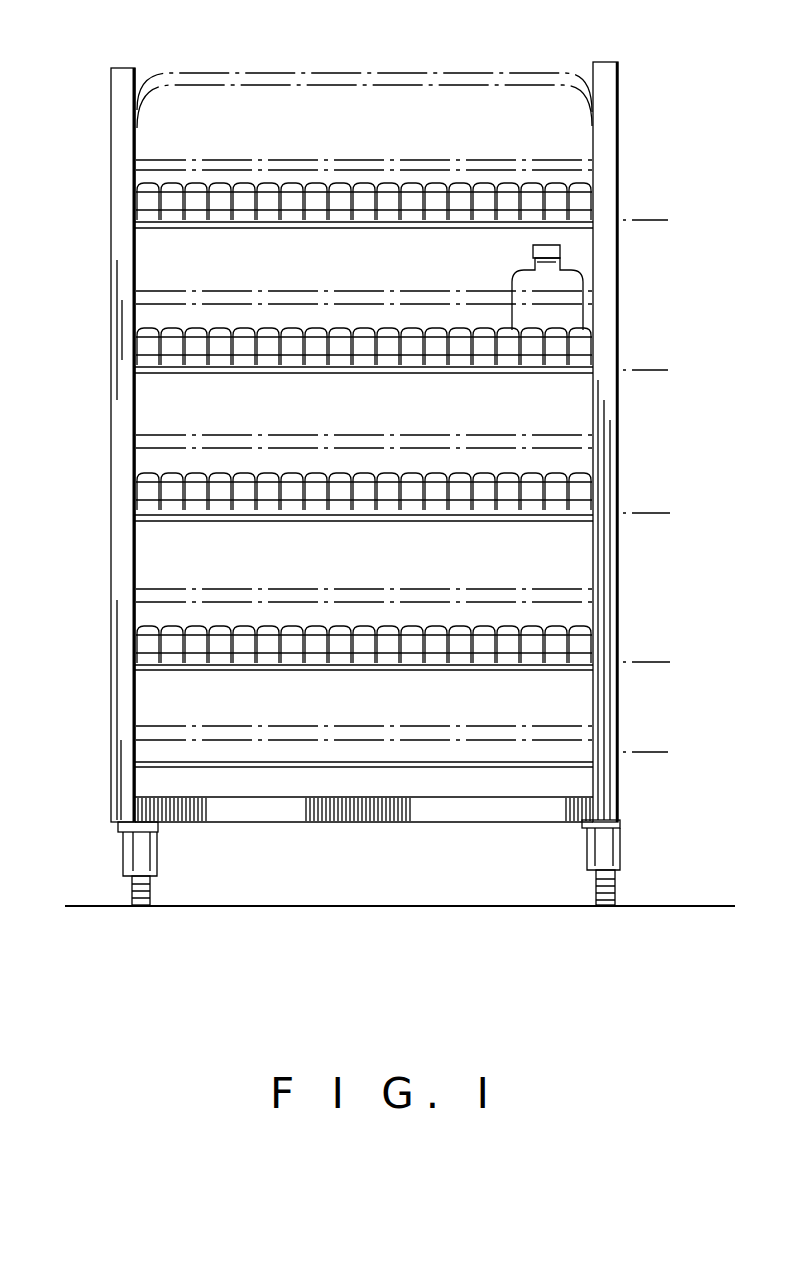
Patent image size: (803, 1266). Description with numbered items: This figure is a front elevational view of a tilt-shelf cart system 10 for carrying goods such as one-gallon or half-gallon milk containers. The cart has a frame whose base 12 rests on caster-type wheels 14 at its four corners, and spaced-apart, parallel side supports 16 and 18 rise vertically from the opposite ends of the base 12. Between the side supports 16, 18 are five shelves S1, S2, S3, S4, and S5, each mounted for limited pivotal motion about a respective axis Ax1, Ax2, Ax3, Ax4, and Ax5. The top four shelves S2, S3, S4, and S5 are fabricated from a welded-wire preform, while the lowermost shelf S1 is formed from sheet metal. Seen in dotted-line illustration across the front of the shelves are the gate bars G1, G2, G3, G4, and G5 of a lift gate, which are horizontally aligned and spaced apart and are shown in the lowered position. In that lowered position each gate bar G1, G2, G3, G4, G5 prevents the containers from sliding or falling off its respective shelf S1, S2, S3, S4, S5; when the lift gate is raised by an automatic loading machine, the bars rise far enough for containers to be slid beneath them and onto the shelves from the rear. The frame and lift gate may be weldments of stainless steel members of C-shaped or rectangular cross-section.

The tilt-shelf cart system 10 is at (133, 56).
The base 12 is at (347, 819).
The caster-type wheels 14 is at (618, 882).
The side support 16 is at (112, 287).
The side support 18 is at (617, 112).
The gate bar G1 is at (292, 722).
The gate bar G2 is at (292, 587).
The gate bar G3 is at (290, 433).
The gate bar G4 is at (290, 290).
The gate bar G5 is at (270, 160).
The shelf S1 is at (468, 750).
The shelf S2 is at (472, 612).
The shelf S3 is at (472, 458).
The shelf S4 is at (474, 305).
The shelf S5 is at (485, 175).
The axis Ax1 is at (670, 756).
The axis Ax2 is at (671, 666).
The axis Ax3 is at (671, 518).
The axis Ax4 is at (669, 374).
The axis Ax5 is at (669, 225).